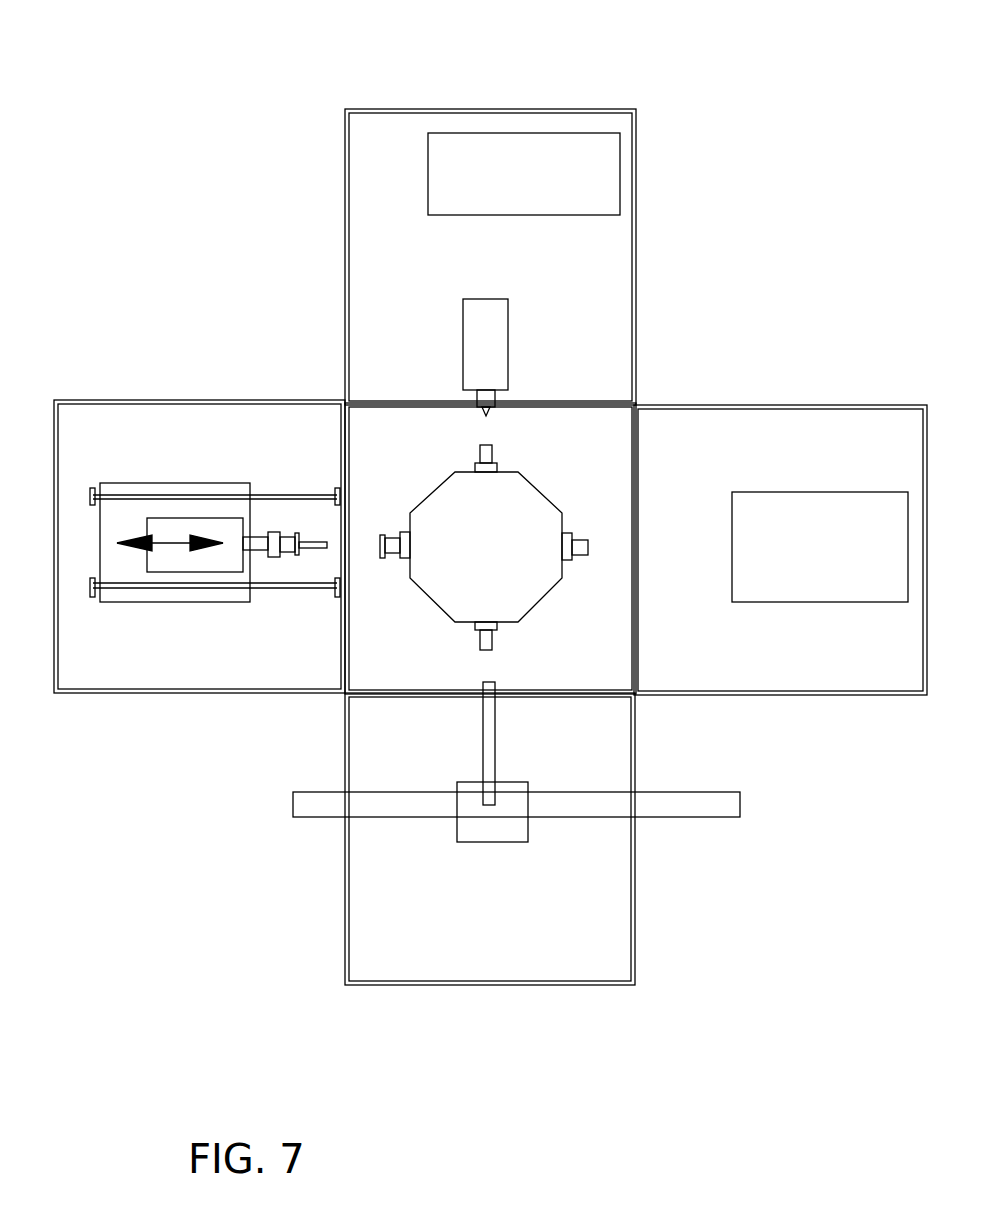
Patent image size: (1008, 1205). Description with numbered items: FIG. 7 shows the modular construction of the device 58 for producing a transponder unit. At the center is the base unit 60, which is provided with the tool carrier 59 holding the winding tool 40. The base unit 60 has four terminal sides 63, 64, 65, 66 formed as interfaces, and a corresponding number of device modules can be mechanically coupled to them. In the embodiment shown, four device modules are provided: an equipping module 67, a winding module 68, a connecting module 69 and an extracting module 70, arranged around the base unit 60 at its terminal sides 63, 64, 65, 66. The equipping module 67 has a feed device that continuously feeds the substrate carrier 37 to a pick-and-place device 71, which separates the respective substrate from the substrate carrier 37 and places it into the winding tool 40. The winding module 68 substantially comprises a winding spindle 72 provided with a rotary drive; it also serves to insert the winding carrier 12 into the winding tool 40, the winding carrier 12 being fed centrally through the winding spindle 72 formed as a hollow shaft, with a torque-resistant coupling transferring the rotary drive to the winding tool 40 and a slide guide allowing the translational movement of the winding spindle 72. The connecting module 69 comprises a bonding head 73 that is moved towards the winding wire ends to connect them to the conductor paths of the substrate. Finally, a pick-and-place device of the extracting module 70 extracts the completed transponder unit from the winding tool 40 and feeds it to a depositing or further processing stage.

The device 58 is at (258, 152).
The connecting module 69 is at (385, 168).
The bonding head 73 is at (478, 337).
The terminal side 65 is at (568, 397).
The base unit 60 is at (606, 431).
The tool carrier 59 is at (488, 563).
The winding tool 40 is at (497, 630).
The terminal side 64 is at (308, 443).
The winding spindle 72 is at (263, 533).
The winding carrier 12 is at (320, 550).
The winding module 68 is at (190, 660).
The extracting module 70 is at (825, 445).
The terminal side 66 is at (677, 620).
The terminal side 63 is at (402, 716).
The pick-and-place device 71 is at (517, 788).
The substrate carrier 37 is at (678, 807).
The equipping module 67 is at (455, 945).